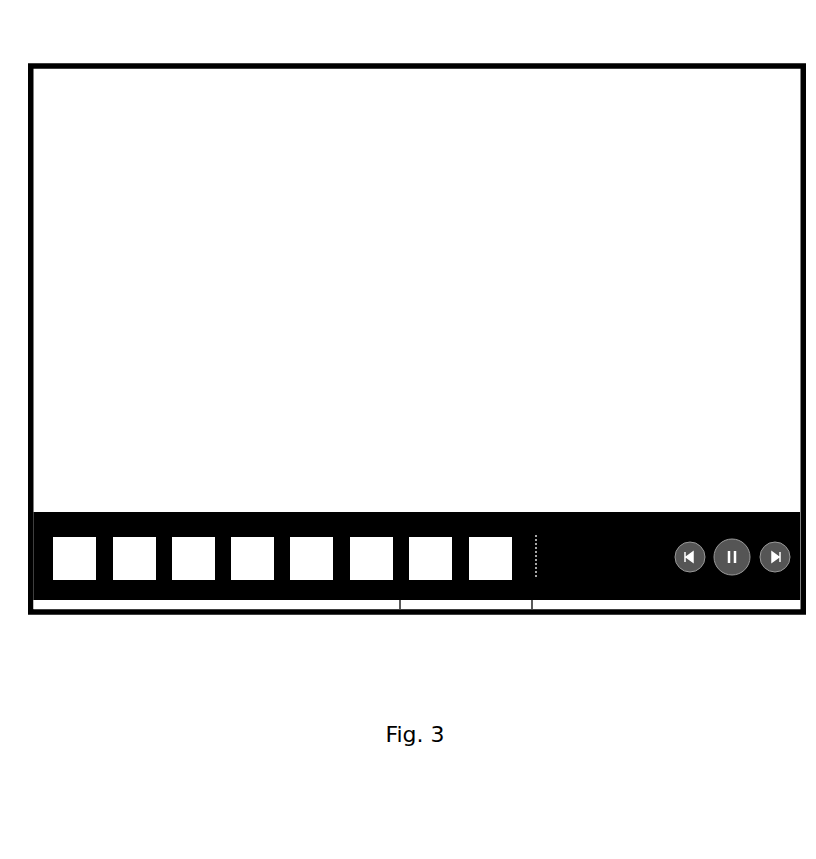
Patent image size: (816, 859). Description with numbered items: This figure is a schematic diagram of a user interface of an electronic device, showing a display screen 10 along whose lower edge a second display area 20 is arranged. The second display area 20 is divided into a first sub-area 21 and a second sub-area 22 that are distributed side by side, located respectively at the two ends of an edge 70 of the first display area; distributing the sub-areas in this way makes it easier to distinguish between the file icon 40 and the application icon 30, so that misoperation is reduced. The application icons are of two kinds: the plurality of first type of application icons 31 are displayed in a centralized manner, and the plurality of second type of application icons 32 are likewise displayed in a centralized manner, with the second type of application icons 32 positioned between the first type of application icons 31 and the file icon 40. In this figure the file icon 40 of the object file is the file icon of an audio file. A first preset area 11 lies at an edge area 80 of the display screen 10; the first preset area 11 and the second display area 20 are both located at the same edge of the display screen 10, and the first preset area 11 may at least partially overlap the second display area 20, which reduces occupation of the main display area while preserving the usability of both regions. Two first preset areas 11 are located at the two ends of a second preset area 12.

The display screen 10 is at (297, 90).
The second display area 20 is at (135, 512).
The application icon 30 is at (283, 490).
The first type of application icons 31 is at (75, 552).
The second type of application icons 32 is at (469, 520).
The first sub-area 21 is at (607, 600).
The file icon 40 is at (752, 600).
The first preset area 11 is at (297, 603).
The edge 70 is at (87, 600).
The second sub-area 22 is at (177, 600).
The edge area 80 is at (383, 603).
The second preset area 12 is at (468, 603).